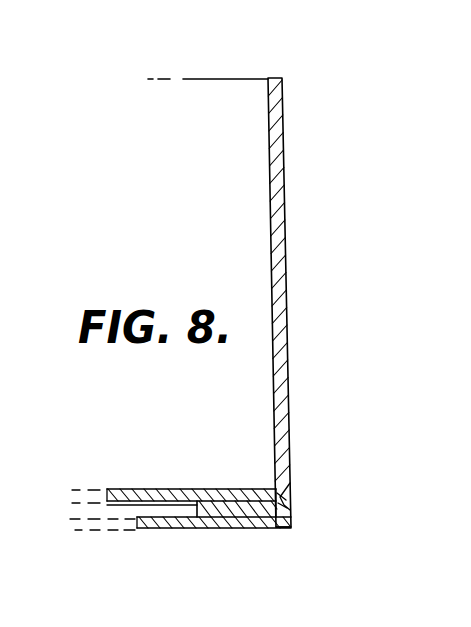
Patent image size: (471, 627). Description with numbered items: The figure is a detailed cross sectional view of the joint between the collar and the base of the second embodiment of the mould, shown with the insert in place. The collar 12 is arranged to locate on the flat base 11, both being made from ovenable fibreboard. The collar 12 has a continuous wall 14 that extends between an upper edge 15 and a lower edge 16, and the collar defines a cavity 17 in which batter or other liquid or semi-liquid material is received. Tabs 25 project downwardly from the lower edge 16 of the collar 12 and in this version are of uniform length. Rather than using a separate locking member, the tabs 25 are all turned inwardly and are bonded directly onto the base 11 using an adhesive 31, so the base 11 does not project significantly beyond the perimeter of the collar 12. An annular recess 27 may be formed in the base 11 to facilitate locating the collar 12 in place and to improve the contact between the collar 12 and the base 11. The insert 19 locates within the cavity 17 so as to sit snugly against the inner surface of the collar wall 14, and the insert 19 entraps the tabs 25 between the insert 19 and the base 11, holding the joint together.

The base 11 is at (180, 559).
The collar 12 is at (327, 302).
The wall 14 is at (290, 383).
The upper edge 15 is at (272, 79).
The lower edge 16 is at (292, 482).
The cavity 17 is at (211, 404).
The insert 19 is at (165, 493).
The tabs 25 is at (223, 507).
The annular recess 27 is at (285, 530).
The adhesive 31 is at (234, 528).